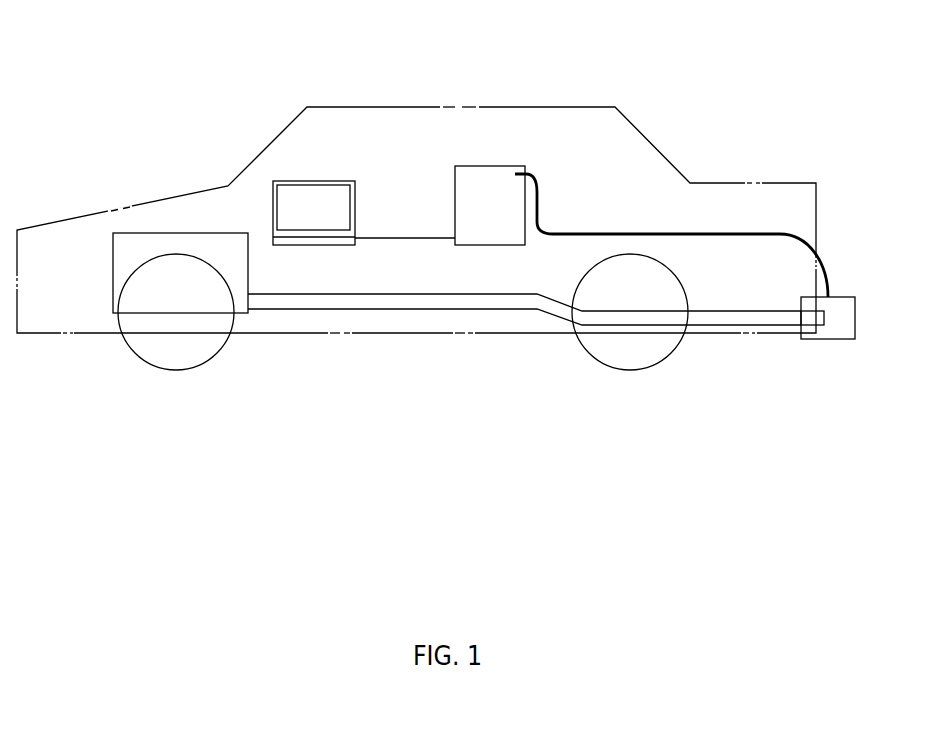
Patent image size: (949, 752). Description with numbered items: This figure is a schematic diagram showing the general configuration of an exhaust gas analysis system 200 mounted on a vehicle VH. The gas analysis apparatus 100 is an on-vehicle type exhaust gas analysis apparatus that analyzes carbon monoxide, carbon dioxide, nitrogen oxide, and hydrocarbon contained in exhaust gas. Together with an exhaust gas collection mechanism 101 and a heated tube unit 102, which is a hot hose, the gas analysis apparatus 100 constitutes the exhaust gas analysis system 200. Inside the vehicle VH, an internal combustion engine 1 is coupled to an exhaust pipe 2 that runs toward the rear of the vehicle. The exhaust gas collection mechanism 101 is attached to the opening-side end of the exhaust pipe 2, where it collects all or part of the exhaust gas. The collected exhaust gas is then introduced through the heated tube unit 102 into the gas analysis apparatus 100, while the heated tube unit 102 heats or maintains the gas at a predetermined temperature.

The vehicle VH is at (83, 213).
The exhaust gas analysis system 200 is at (705, 97).
The internal combustion engine 1 is at (113, 268).
The exhaust pipe 2 is at (765, 326).
The gas analysis apparatus 100 is at (455, 180).
The exhaust gas collection mechanism 101 is at (855, 327).
The heated tube unit 102 is at (627, 233).